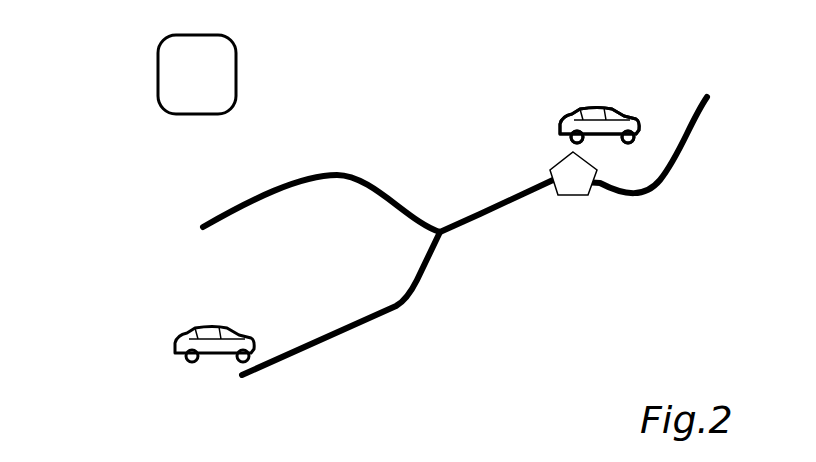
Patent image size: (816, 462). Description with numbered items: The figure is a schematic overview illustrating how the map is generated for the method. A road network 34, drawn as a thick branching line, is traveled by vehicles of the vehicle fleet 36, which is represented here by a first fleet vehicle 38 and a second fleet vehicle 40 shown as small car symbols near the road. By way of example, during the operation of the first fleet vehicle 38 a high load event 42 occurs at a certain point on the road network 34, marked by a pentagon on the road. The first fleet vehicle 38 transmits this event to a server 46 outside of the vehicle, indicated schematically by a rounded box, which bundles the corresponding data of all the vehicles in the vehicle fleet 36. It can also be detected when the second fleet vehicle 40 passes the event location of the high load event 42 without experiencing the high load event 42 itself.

The road network 34 is at (497, 208).
The vehicle fleet 36 is at (560, 130).
The first fleet vehicle 38 is at (599, 126).
The second fleet vehicle 40 is at (175, 342).
The high load event 42 is at (572, 195).
The server 46 is at (236, 73).